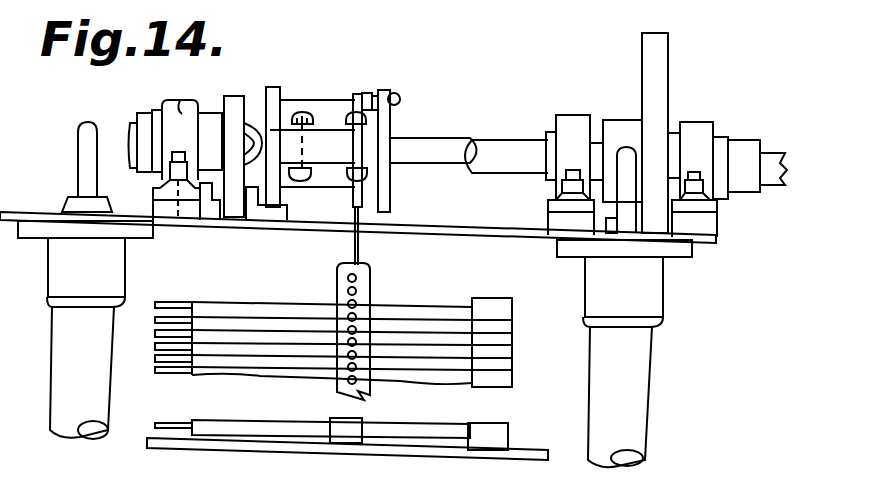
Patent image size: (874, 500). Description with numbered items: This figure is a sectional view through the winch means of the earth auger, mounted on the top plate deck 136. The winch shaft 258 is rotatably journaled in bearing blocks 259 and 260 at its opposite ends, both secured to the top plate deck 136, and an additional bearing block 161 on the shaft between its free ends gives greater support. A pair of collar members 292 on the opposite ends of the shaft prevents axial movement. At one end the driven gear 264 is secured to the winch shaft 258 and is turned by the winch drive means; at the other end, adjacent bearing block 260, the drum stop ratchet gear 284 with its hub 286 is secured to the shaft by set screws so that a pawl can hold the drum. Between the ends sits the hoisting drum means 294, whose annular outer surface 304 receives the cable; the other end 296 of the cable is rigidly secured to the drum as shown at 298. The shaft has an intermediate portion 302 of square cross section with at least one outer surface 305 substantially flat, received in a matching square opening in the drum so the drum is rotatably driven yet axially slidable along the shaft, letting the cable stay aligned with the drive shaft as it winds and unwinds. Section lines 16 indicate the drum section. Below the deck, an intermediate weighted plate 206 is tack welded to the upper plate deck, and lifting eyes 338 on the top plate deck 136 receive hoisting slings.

The top plate deck 136 is at (716, 240).
The lifting eyes 338 is at (80, 143).
The collar members 292 is at (148, 114).
The bearing block 260 is at (181, 110).
The hub 286 is at (212, 115).
The drum stop ratchet gear 284 is at (246, 96).
The hoisting drum means 294 is at (293, 100).
The section line 16 is at (300, 92).
The annular outer surface 304 is at (340, 148).
The other end of the cable means 296 is at (366, 92).
The cable securing point 298 is at (380, 113).
The outer surface 305 is at (433, 150).
The intermediate portion 302 is at (452, 158).
The winch shaft 258 is at (535, 128).
The bearing block 161 is at (577, 122).
The driven gear 264 is at (664, 80).
The bearing block 259 is at (712, 121).
The intermediate weighted plate 206 is at (452, 445).